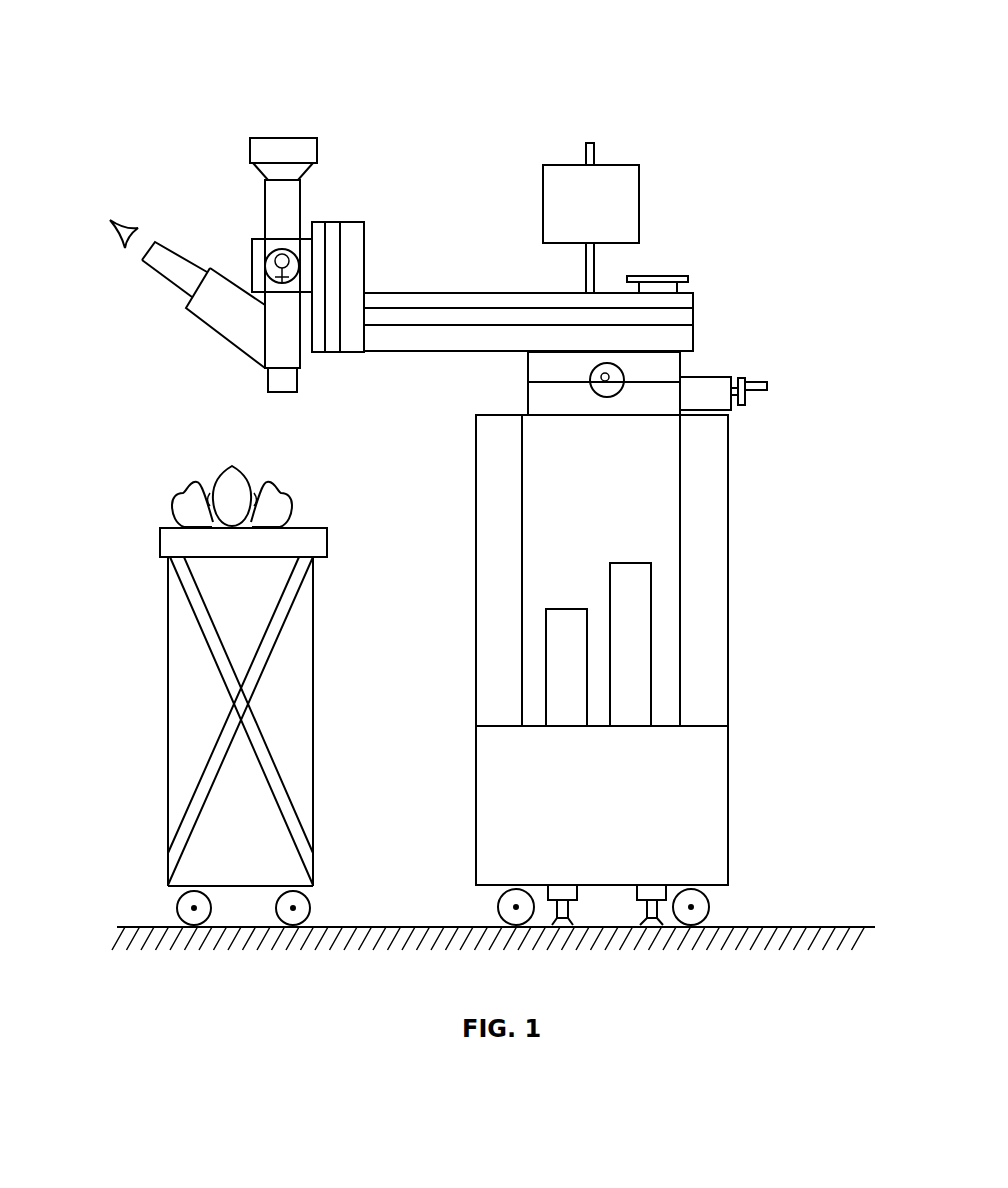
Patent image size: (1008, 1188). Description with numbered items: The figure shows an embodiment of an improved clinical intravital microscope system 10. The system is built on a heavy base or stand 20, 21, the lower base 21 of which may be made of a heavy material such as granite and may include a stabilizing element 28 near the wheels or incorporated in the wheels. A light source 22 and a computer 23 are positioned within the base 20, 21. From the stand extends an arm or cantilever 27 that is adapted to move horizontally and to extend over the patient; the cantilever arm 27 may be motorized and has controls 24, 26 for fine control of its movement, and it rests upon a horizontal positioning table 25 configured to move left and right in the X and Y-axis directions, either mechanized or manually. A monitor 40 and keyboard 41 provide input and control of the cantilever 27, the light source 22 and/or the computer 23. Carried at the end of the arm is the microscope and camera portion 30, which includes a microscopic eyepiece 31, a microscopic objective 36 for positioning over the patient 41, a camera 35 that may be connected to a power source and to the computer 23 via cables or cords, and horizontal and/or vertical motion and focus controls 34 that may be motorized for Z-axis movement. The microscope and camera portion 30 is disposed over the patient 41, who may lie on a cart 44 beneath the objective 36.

The clinical intravital microscope system 10 is at (477, 62).
The base 20 is at (728, 603).
The base 21 is at (708, 820).
The light source 22 is at (565, 675).
The computer 23 is at (636, 680).
The control 24 is at (753, 382).
The horizontal positioning table 25 is at (657, 363).
The control 26 is at (603, 379).
The cantilever arm 27 is at (510, 290).
The stabilizing element 28 is at (652, 926).
The microscope and camera portion 30 is at (159, 116).
The microscope eyepiece 31 is at (107, 210).
The motion and focus controls 34 is at (258, 256).
The camera 35 is at (285, 153).
The microscope objective 36 is at (283, 384).
The monitor 40 is at (626, 176).
The keyboard / patient 41 is at (660, 275).
The cart 44 is at (114, 713).